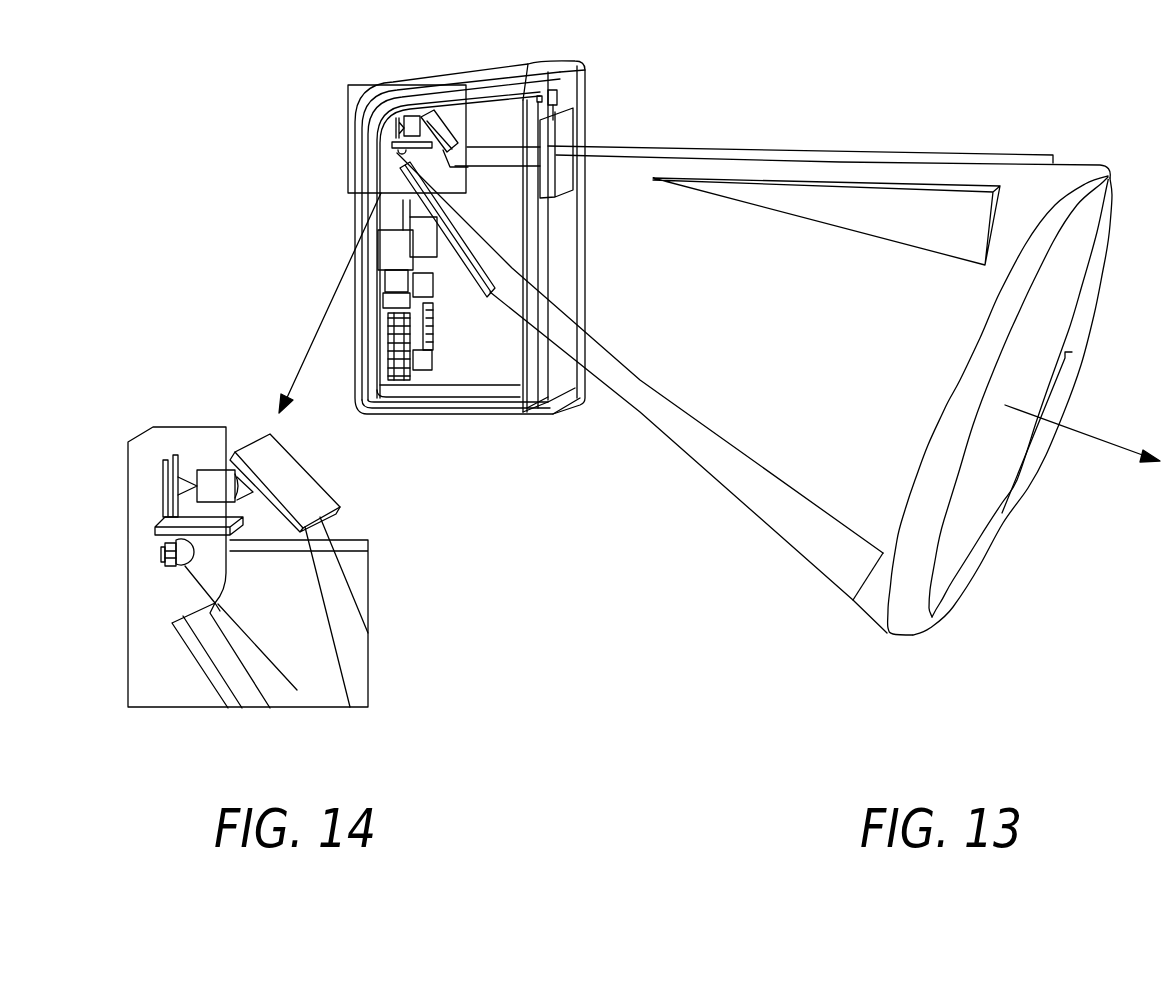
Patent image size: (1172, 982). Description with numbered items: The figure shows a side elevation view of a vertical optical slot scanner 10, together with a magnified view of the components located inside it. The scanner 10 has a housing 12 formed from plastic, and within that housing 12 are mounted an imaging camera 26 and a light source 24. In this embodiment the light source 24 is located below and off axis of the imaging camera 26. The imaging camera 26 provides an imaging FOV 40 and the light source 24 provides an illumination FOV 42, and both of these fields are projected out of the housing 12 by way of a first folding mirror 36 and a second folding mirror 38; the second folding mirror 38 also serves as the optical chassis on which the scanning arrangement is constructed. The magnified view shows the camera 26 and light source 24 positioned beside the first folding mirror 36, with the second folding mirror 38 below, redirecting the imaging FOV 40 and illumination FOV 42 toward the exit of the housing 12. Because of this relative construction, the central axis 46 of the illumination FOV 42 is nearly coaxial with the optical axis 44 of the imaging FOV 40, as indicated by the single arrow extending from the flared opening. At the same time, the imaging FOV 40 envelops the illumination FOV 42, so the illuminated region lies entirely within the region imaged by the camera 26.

In FIG. 13, the optical slot scanner 10 is at (790, 92).
In FIG. 13, the housing 12 is at (553, 78).
In FIG. 14, the light source 24 is at (161, 549).
In FIG. 13, the imaging camera 26 is at (390, 135).
In FIG. 14, the imaging camera 26 is at (207, 475).
In FIG. 13, the first folding mirror 36 is at (438, 117).
In FIG. 14, the first folding mirror 36 is at (308, 485).
In FIG. 13, the second folding mirror 38 is at (480, 285).
In FIG. 14, the second folding mirror 38 is at (225, 667).
In FIG. 13, the imaging FOV 40 is at (812, 567).
In FIG. 14, the imaging FOV 40 is at (348, 618).
In FIG. 13, the illumination FOV 42 is at (870, 617).
In FIG. 14, the illumination FOV 42 is at (297, 690).
In FIG. 13, the optical axis 44 is at (1090, 440).
In FIG. 13, the central axis 46 is at (1090, 440).